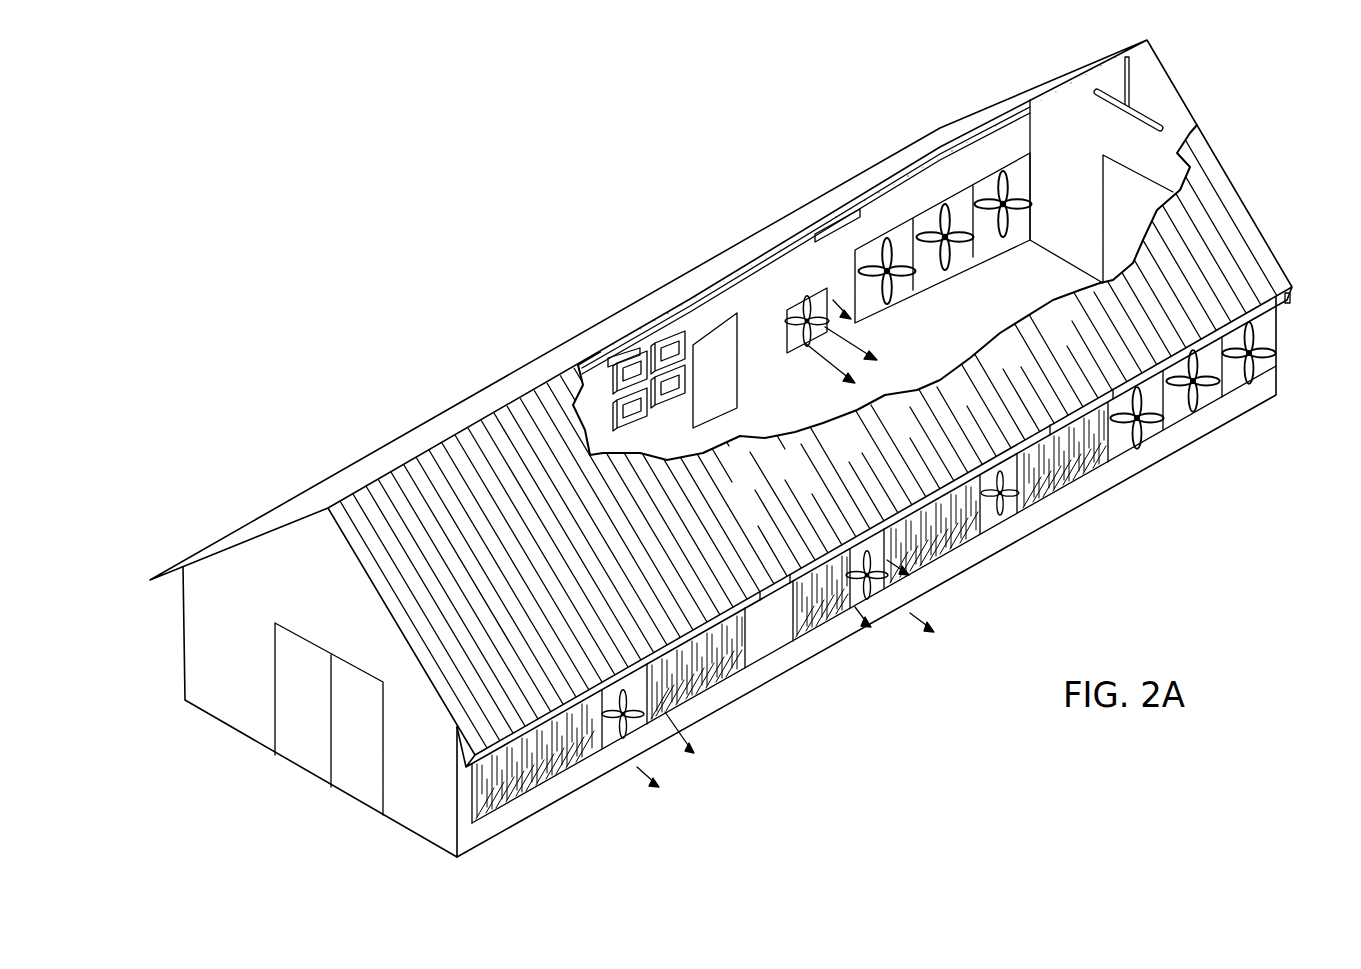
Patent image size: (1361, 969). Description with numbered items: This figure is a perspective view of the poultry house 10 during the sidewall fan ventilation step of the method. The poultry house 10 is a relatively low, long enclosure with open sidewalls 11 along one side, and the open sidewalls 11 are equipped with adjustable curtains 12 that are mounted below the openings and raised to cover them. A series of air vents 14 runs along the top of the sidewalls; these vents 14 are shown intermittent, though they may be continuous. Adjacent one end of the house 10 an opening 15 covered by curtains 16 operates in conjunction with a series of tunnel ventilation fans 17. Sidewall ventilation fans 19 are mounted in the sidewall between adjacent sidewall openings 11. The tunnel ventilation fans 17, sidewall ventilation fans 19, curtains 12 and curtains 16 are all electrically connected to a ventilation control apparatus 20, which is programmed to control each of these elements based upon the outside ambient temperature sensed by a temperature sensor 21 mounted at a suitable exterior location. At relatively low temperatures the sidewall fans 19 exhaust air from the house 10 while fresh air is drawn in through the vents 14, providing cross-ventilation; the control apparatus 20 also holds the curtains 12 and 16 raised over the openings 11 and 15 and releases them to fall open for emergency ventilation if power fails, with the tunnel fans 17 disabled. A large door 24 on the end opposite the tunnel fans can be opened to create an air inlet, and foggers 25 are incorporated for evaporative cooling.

The poultry house 10 is at (902, 680).
The open sidewalls 11 is at (735, 672).
The adjustable curtains 12 is at (753, 637).
The air vents 14 is at (476, 762).
The opening 15 is at (543, 790).
The curtains 16 is at (580, 735).
The tunnel ventilation fans 17 is at (973, 192).
The sidewall ventilation fans 19 is at (633, 698).
The ventilation control apparatus 20 is at (636, 358).
The temperature sensor 21 is at (1292, 297).
The large door 24 is at (357, 783).
The foggers 25 is at (1153, 110).